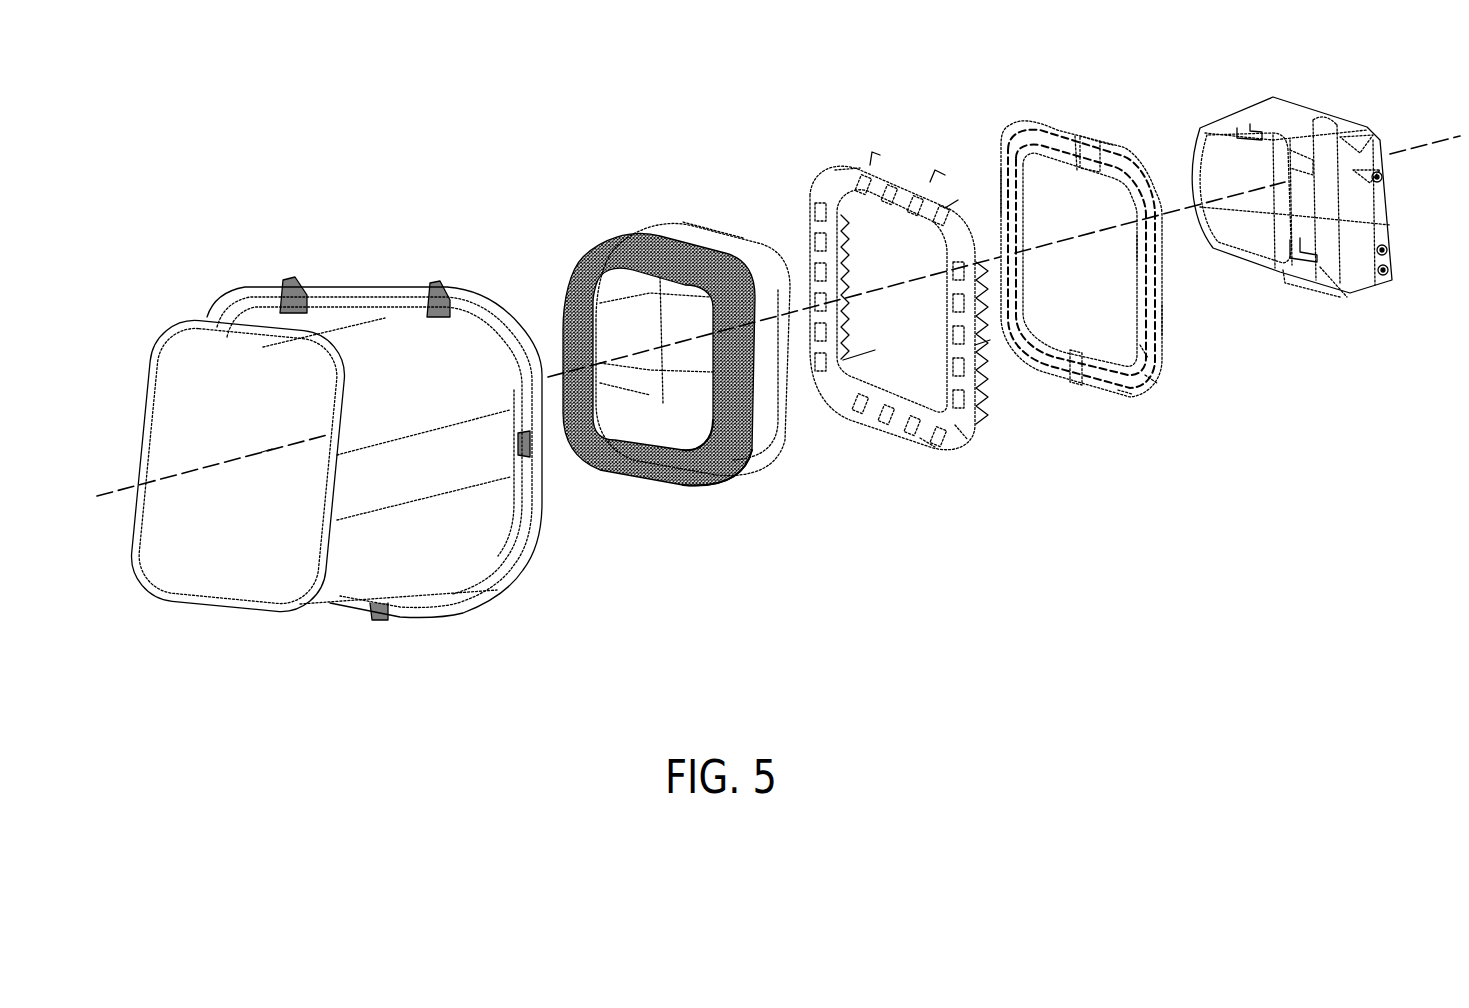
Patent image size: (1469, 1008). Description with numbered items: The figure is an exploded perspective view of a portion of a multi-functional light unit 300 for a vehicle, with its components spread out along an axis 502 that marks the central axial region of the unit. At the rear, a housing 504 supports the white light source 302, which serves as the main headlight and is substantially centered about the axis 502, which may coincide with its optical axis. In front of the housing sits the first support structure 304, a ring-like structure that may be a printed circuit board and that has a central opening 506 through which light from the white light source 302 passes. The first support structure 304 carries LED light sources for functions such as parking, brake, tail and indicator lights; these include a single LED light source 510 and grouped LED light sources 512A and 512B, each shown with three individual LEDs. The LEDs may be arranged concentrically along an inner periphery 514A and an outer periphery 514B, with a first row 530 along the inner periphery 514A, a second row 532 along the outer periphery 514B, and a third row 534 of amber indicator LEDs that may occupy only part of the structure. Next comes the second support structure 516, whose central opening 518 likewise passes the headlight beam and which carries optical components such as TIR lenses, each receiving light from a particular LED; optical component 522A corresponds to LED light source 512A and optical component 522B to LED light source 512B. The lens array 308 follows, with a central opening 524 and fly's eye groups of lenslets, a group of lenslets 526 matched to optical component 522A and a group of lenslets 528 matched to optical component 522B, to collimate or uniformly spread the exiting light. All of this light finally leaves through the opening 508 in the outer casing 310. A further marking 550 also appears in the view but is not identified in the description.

The light unit 300 is at (405, 77).
The white light source 302 is at (1260, 233).
The first support structure 304 is at (1113, 145).
The lens array 308 is at (637, 237).
The outer casing 310 is at (472, 297).
The axis 502 is at (263, 455).
The housing 504 is at (1300, 158).
The central opening 506 is at (1104, 268).
The opening 508 is at (267, 521).
The LED light source 510 is at (1075, 154).
The LED light source 512A is at (1150, 386).
The LED light source 512B is at (1127, 396).
The inner periphery 514A is at (1142, 248).
The outer periphery 514B is at (1160, 324).
The second support structure 516 is at (837, 174).
The central opening 518 is at (918, 337).
The optical component 522A is at (962, 434).
The optical component 522B is at (931, 441).
The central opening 524 is at (705, 376).
The group of lenslets 526 is at (725, 473).
The group of lenslets 528 is at (685, 483).
The first row 530 is at (1133, 396).
The second row 532 is at (1143, 352).
The third row 534 is at (1100, 160).
The seal compression direction 550 is at (997, 207).